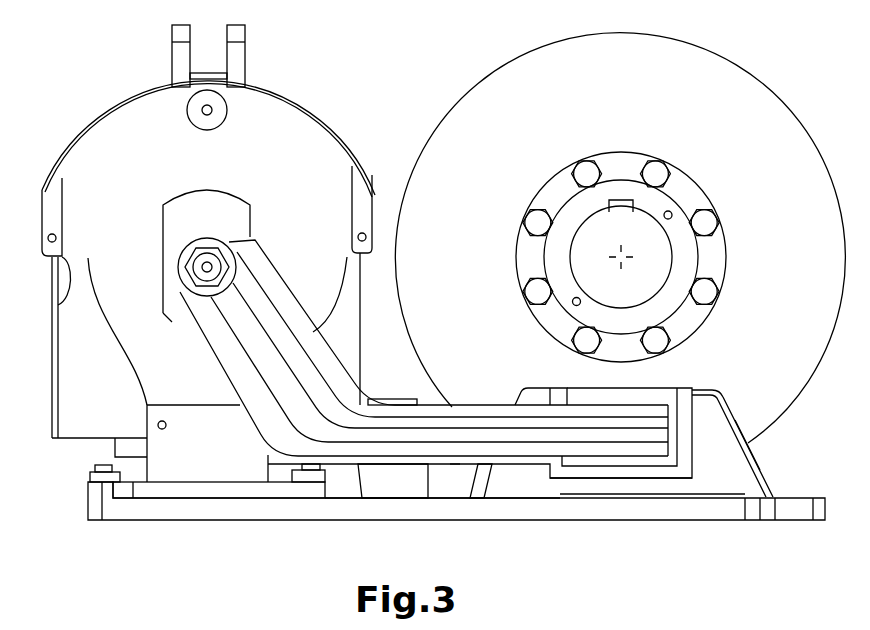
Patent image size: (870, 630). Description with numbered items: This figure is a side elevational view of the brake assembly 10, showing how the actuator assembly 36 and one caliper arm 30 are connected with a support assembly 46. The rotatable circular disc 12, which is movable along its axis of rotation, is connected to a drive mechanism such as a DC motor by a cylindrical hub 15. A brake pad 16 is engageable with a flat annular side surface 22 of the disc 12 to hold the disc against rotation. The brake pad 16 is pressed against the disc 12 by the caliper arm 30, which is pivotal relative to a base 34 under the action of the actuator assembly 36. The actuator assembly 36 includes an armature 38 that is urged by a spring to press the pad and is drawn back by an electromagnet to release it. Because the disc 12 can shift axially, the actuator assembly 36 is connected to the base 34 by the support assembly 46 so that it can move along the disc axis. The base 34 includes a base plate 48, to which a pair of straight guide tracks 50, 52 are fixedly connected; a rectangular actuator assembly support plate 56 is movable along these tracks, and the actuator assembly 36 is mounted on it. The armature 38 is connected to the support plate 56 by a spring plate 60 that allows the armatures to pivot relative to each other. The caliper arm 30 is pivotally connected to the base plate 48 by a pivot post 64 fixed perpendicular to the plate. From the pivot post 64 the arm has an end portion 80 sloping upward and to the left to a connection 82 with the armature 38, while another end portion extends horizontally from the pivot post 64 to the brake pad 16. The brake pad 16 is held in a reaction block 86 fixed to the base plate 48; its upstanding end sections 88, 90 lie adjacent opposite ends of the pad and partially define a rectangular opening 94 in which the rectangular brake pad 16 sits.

The brake assembly 10 is at (416, 75).
The rotatable circular disc 12 is at (808, 102).
The cylindrical hub 15 is at (616, 190).
The brake pad 16 is at (685, 394).
The side surface 22 is at (795, 188).
The caliper arm 30 is at (455, 478).
The base 34 is at (665, 520).
The actuator assembly 36 is at (113, 92).
The armature 38 is at (64, 290).
The support assembly 46 is at (128, 516).
The base plate 48 is at (342, 507).
The guide track 50 is at (98, 476).
The guide track 52 is at (308, 482).
The actuator assembly support plate 56 is at (185, 488).
The spring plate 60 is at (205, 430).
The pivot post 64 is at (390, 487).
The end portion 80 is at (283, 302).
The connection 82 is at (207, 267).
The reaction block 86 is at (758, 462).
The end section 88 is at (543, 392).
The end section 90 is at (710, 425).
The rectangular opening 94 is at (585, 482).